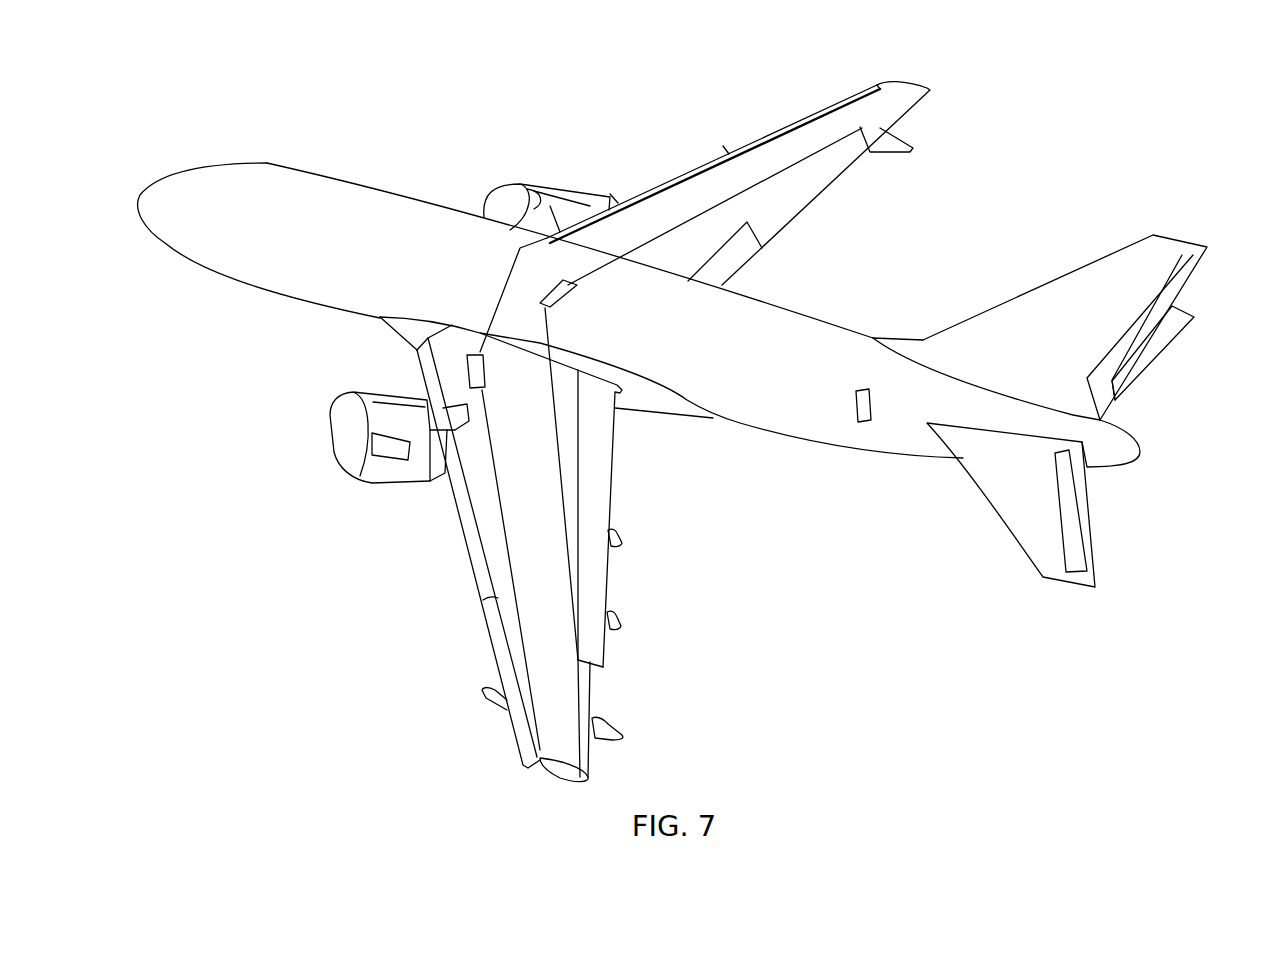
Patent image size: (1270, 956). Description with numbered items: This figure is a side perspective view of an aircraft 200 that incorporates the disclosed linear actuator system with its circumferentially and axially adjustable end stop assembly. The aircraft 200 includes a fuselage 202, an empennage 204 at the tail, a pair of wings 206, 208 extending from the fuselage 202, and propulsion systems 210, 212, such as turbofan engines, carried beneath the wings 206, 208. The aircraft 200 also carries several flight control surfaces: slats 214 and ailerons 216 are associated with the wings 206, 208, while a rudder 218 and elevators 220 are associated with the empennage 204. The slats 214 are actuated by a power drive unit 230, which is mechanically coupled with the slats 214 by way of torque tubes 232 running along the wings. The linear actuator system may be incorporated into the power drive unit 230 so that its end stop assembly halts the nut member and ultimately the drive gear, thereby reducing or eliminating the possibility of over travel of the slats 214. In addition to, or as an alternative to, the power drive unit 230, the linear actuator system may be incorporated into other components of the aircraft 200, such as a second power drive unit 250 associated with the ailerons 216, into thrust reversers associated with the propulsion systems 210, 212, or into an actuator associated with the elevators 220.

The aircraft 200 is at (1033, 172).
The fuselage 202 is at (818, 310).
The empennage 204 is at (1219, 253).
The wing 206 is at (560, 778).
The wing 208 is at (918, 93).
The propulsion system 210 is at (368, 475).
The propulsion system 212 is at (525, 185).
The slats 214 is at (765, 135).
The ailerons 216 is at (800, 207).
The rudder 218 is at (1120, 325).
The elevators 220 is at (1140, 385).
The power drive unit 230 is at (493, 382).
The torque tubes 232 is at (497, 293).
The second power drive unit 250 is at (570, 300).